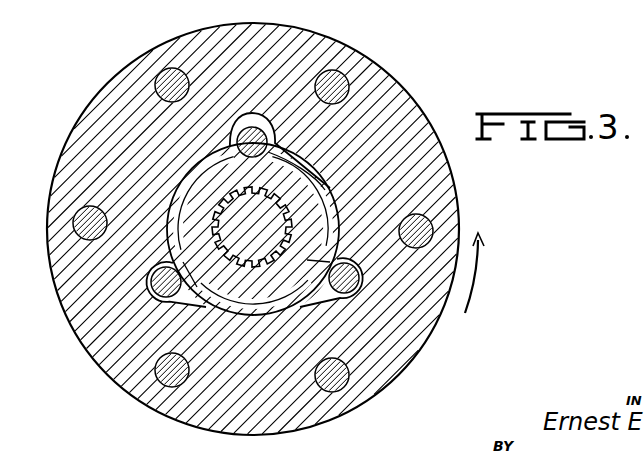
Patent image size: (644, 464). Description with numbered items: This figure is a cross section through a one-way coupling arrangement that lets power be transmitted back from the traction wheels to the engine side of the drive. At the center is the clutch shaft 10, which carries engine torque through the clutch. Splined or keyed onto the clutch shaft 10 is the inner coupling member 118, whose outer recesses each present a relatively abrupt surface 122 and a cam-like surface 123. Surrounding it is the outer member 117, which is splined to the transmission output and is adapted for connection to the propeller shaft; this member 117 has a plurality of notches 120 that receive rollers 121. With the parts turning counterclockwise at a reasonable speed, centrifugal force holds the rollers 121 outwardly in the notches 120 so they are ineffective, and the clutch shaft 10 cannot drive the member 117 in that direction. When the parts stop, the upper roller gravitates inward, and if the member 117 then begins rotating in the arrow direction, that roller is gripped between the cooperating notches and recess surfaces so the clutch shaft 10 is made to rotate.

The clutch shaft 10 is at (252, 227).
The member adapted for connection to the propeller shaft 117 is at (460, 197).
The other member of the one-way drive coupling 118 is at (259, 314).
The notches 120 is at (296, 66).
The rollers 121 is at (150, 293).
The relatively abrupt surface 122 is at (337, 200).
The cam-like surface 123 is at (297, 292).